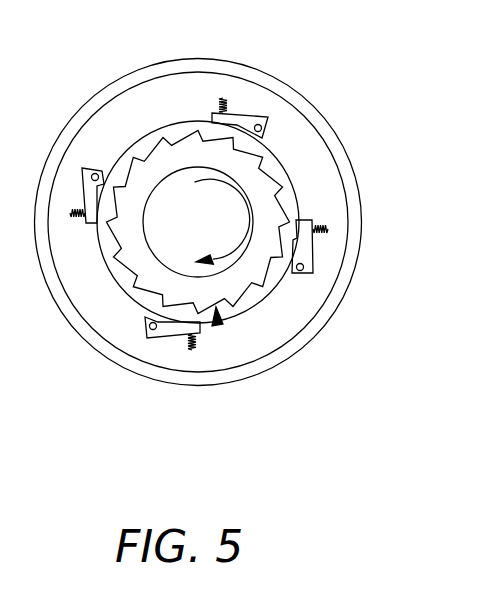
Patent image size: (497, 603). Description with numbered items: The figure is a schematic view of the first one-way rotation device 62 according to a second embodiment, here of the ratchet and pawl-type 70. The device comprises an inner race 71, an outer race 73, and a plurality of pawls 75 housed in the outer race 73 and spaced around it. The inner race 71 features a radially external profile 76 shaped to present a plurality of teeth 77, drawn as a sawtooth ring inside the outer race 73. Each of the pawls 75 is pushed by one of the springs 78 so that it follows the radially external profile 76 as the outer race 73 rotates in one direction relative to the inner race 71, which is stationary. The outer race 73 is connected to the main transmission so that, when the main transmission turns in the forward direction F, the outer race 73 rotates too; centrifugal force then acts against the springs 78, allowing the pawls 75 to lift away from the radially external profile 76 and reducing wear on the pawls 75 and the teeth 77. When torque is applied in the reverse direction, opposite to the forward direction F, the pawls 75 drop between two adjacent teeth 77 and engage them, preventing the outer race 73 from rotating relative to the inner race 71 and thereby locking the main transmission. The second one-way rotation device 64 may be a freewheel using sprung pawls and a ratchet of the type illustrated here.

The ratchet and pawl-type 70 is at (220, 254).
The first one-way rotation device 62 is at (220, 254).
The second one-way rotation device 64 is at (404, 448).
The inner race 71 is at (260, 183).
The outer race 73 is at (268, 335).
The pawls 75 is at (308, 252).
The radially external profile 76 is at (217, 325).
The teeth 77 is at (281, 263).
The springs 78 is at (224, 97).
The forward direction F is at (238, 210).